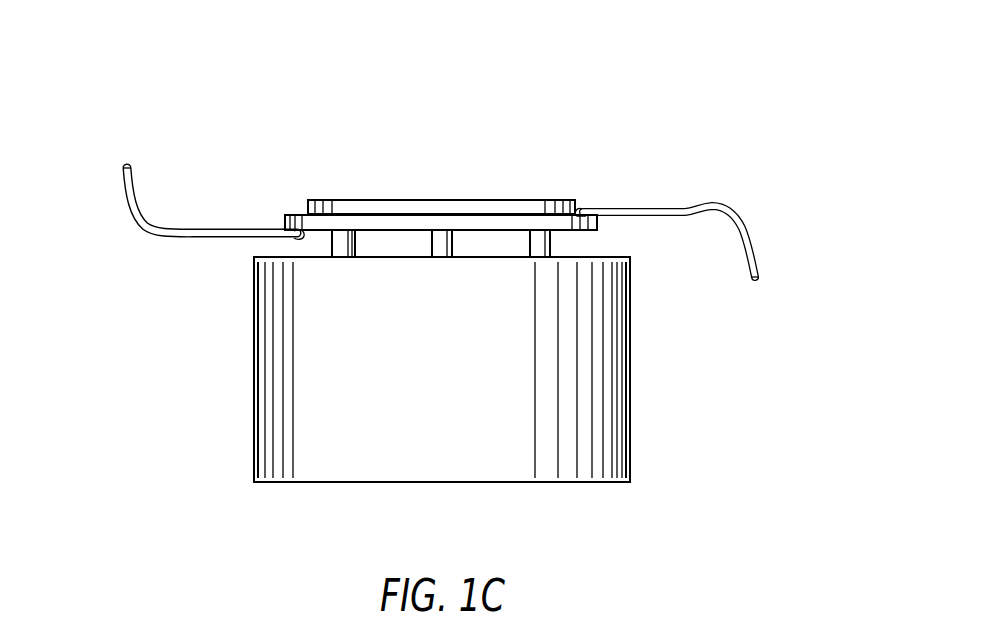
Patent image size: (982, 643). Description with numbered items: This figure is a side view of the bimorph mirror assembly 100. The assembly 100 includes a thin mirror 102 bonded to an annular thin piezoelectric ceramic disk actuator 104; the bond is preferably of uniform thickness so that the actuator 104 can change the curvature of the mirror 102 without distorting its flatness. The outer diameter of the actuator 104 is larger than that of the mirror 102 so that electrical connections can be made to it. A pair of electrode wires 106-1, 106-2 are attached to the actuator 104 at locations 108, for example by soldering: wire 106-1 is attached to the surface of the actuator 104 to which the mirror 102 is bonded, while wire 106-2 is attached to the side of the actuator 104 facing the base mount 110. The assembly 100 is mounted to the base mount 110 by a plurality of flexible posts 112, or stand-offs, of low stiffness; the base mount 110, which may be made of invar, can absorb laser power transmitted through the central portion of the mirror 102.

The bimorph mirror assembly 100 is at (691, 94).
The mirror 102 is at (507, 200).
The actuator 104 is at (295, 215).
The electrode wire 106-1 is at (742, 213).
The electrode wire 106-2 is at (142, 235).
The locations 108 is at (288, 241).
The base mount 110 is at (630, 447).
The flexible posts 112 is at (537, 245).